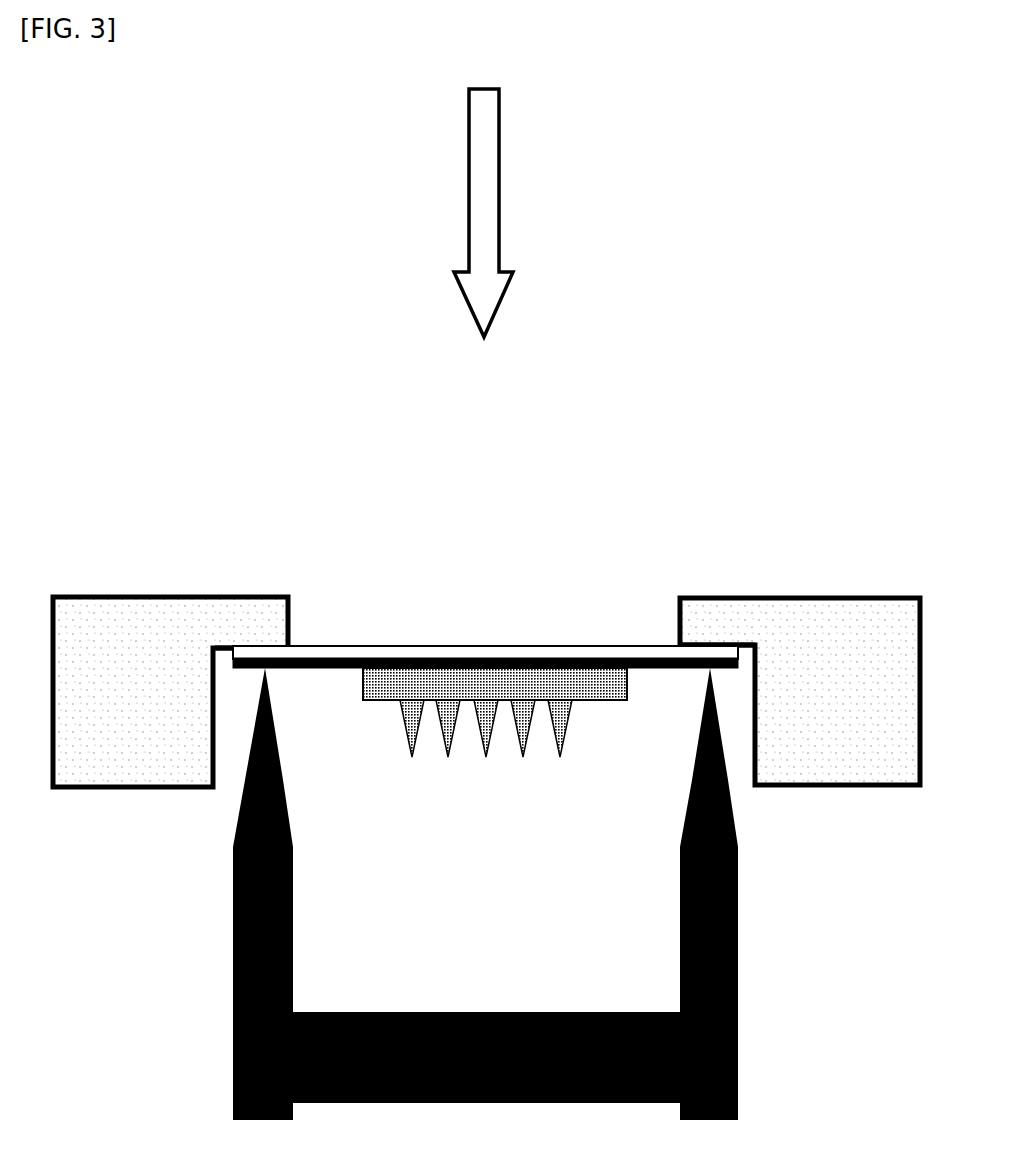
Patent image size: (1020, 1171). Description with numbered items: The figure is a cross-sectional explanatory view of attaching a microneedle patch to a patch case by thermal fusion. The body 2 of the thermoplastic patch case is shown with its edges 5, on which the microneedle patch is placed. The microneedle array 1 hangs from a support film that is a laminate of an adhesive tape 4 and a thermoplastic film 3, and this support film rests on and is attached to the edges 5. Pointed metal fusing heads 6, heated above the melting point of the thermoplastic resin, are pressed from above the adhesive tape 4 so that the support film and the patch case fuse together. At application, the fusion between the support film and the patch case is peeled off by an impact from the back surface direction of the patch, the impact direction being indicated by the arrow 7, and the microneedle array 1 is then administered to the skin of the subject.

The microneedle array 1 is at (495, 728).
The body of the patch case 2 is at (486, 692).
The thermoplastic film 3 is at (538, 636).
The adhesive tape 4 is at (616, 648).
The edge of the patch case 5 is at (485, 626).
The pointed metal fusing head 6 is at (485, 894).
The arrow indicating impact direction 7 is at (500, 213).